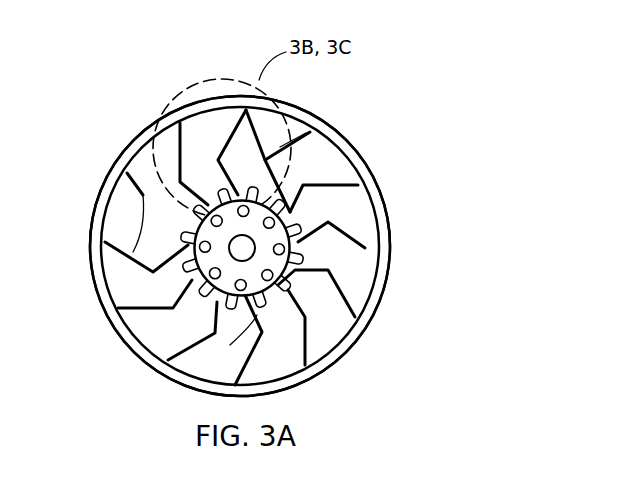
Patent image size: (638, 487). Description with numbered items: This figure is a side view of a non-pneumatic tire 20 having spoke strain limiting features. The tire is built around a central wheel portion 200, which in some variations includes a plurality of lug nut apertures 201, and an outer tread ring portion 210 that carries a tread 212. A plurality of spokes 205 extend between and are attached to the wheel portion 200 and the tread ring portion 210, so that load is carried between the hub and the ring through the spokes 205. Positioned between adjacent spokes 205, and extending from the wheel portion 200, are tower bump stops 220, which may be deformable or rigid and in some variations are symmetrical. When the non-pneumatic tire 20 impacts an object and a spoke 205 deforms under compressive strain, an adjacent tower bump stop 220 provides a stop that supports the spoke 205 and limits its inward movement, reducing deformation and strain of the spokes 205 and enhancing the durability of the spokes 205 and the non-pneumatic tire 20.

The non-pneumatic tire 20 is at (351, 118).
The wheel portion 200 is at (208, 305).
The lug nut apertures 201 is at (285, 252).
The spokes 205 is at (190, 218).
The tread ring portion 210 is at (374, 200).
The tread 212 is at (390, 247).
The tower bump stop 220 is at (300, 222).